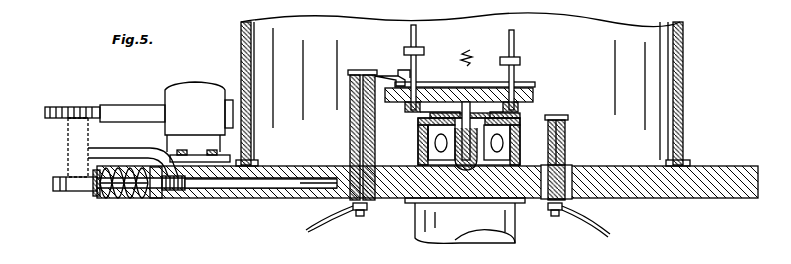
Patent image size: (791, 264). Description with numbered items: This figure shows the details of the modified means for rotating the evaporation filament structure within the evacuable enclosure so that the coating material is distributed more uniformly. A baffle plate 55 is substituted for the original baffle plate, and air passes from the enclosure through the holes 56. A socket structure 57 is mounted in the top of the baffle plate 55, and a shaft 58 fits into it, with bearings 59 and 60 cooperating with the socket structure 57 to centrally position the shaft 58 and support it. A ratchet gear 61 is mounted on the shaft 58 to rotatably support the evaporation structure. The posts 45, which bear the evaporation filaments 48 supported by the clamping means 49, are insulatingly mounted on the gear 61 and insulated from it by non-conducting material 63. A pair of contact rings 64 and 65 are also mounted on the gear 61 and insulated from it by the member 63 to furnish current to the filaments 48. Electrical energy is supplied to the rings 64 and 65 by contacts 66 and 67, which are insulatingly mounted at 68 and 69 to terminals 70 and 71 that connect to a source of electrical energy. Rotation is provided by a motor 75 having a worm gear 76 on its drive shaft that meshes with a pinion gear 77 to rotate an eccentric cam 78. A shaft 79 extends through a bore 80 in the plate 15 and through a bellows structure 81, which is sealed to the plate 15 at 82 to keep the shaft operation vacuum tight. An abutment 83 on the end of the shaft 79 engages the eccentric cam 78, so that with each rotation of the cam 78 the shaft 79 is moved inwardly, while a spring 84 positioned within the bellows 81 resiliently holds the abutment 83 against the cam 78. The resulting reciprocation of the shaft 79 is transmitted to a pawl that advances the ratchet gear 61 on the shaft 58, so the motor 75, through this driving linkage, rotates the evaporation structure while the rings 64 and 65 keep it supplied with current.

The plate 15 is at (735, 188).
The posts 45 is at (411, 56).
The evaporation filaments 48 is at (468, 50).
The clamping means 49 is at (411, 48).
The baffle plate 55 is at (467, 170).
The holes 56 is at (420, 150).
The socket structure 57 is at (428, 135).
The shaft 58 is at (460, 100).
The bearing 59 is at (506, 118).
The bearing 60 is at (505, 148).
The ratchet gear 61 is at (535, 84).
The non-conducting material 63 is at (405, 108).
The contact ring 64 is at (455, 88).
The contact ring 65 is at (420, 118).
The contact 66 is at (392, 78).
The contact 67 is at (567, 128).
The insulating mounting 68 is at (350, 134).
The insulating mounting 69 is at (566, 148).
The terminal 70 is at (684, 57).
The terminal 71 is at (554, 217).
The motor 75 is at (183, 100).
The worm gear 76 is at (78, 106).
The pinion gear 77 is at (58, 106).
The eccentric cam 78 is at (53, 186).
The shaft 79 is at (206, 190).
The bore 80 is at (312, 190).
The bellows structure 81 is at (114, 200).
The seal 82 is at (160, 198).
The abutment 83 is at (96, 196).
The spring 84 is at (130, 200).